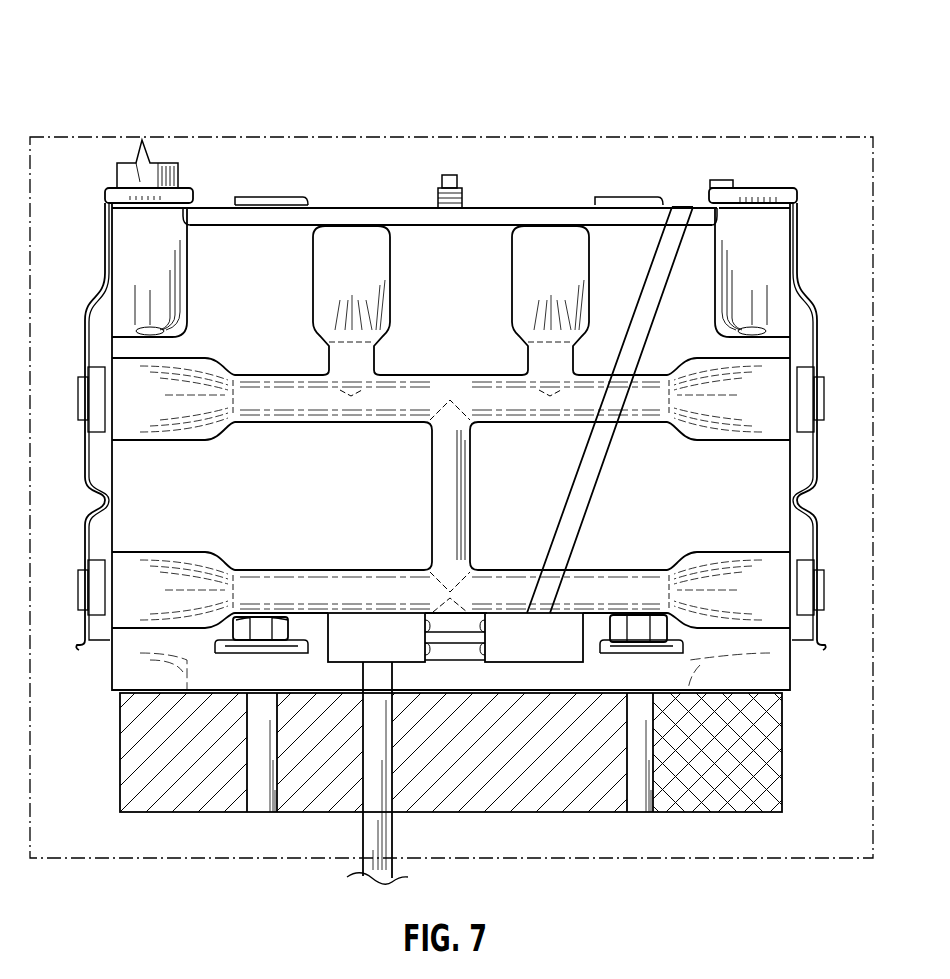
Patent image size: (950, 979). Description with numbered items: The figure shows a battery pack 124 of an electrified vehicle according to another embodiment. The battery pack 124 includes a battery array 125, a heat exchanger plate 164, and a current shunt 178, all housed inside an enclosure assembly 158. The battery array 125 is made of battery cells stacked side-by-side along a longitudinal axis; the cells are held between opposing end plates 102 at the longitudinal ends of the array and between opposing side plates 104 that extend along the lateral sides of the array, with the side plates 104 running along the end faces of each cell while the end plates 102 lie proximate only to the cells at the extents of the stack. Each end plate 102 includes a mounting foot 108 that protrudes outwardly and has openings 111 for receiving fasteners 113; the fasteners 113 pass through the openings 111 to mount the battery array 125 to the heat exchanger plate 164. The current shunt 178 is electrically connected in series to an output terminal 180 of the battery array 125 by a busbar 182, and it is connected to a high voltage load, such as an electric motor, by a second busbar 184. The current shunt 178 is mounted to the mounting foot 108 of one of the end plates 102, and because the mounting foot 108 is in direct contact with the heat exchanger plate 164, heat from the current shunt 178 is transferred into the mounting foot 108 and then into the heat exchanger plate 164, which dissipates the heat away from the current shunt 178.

The battery pack 124 is at (786, 48).
The enclosure assembly 158 is at (826, 137).
The battery array 125 is at (503, 204).
The output terminal 180 is at (713, 180).
The end plate 102 is at (398, 248).
The side plate 104 is at (96, 358).
The busbar 182 is at (658, 256).
The current shunt 178 is at (368, 640).
The mounting foot 108 is at (663, 677).
The opening 111 is at (217, 648).
The second busbar 184 is at (363, 817).
The heat exchanger plate 164 is at (478, 748).
The fastener 113 is at (260, 727).